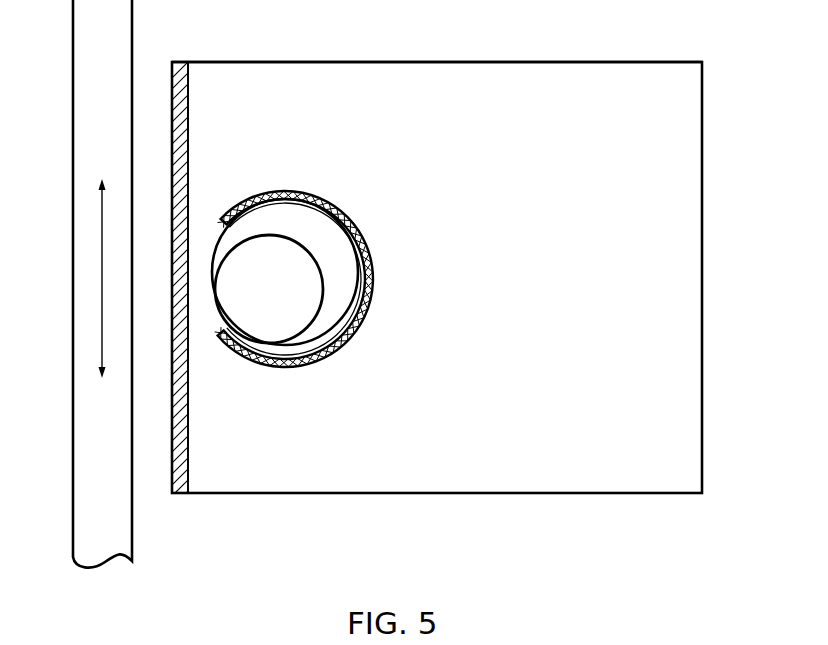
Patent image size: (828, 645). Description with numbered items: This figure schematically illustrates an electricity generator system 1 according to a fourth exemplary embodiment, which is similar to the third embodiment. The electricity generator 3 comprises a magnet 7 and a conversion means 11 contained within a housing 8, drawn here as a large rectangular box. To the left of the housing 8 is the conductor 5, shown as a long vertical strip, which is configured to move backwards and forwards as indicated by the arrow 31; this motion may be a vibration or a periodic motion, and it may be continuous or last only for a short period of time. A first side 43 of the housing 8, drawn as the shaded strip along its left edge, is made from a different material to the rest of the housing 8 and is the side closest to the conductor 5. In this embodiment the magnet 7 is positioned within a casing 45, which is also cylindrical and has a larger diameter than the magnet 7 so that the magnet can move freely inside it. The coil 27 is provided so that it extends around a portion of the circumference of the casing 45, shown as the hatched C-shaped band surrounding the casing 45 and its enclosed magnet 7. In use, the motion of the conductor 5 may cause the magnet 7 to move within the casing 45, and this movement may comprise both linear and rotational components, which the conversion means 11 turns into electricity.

The electricity generator system 1 is at (294, 521).
The electricity generator 3 is at (702, 207).
The conductor 5 is at (73, 134).
The magnet 7 is at (325, 288).
The housing 8 is at (410, 61).
The conversion means 11 is at (317, 193).
The coil 27 is at (322, 354).
The arrow 31 is at (102, 293).
The first side 43 is at (175, 61).
The casing 45 is at (218, 250).